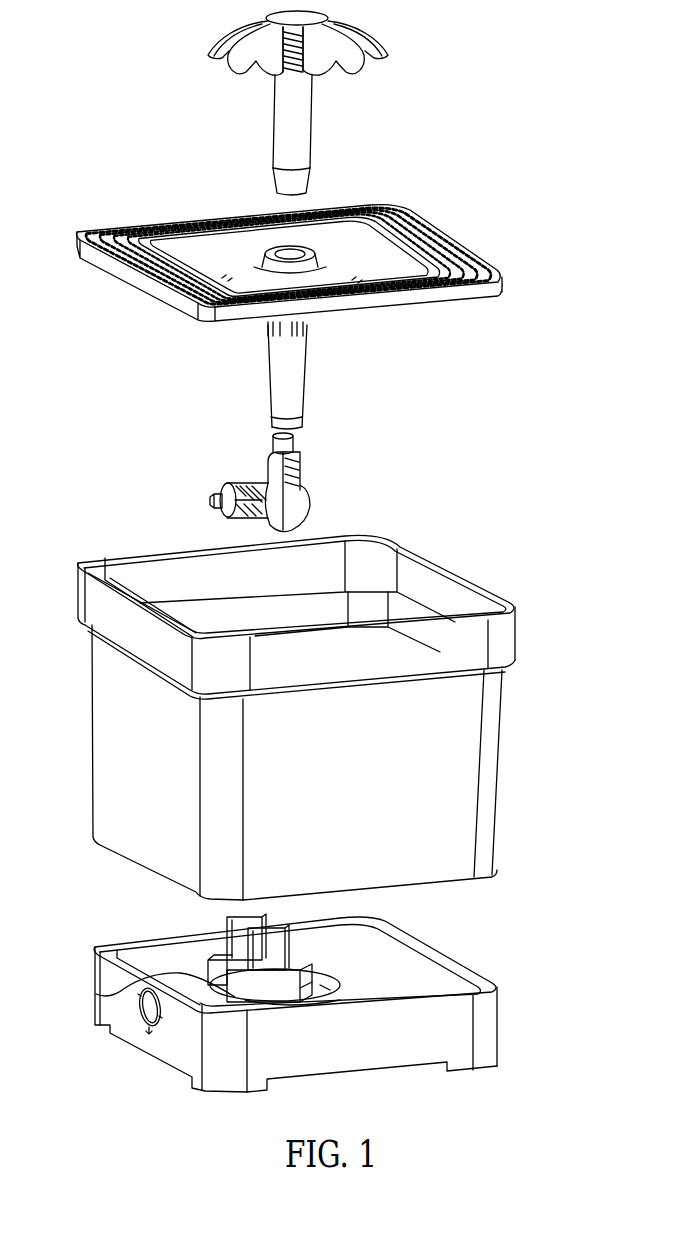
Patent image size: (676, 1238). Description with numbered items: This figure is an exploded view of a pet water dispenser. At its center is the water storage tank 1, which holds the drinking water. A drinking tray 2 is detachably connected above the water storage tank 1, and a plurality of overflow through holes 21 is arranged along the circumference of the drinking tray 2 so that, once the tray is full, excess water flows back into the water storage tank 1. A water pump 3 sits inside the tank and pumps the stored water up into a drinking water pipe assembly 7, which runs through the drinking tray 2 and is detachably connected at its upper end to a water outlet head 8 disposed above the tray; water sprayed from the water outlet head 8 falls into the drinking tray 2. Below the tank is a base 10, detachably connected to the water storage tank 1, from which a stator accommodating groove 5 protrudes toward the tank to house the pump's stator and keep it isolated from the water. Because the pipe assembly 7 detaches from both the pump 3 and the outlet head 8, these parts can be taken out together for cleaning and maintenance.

The water storage tank 1 is at (472, 763).
The drinking tray 2 is at (309, 270).
The overflow through holes 21 is at (490, 267).
The water pump 3 is at (302, 503).
The stator accommodating groove 5 is at (96, 994).
The drinking water pipe assembly 7 is at (300, 382).
The water outlet head 8 is at (362, 42).
The base 10 is at (306, 1003).